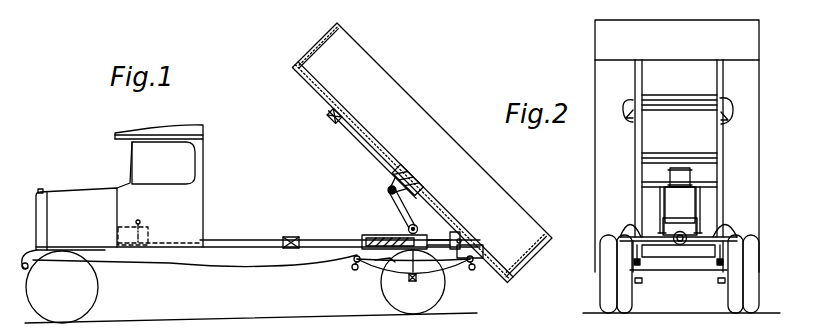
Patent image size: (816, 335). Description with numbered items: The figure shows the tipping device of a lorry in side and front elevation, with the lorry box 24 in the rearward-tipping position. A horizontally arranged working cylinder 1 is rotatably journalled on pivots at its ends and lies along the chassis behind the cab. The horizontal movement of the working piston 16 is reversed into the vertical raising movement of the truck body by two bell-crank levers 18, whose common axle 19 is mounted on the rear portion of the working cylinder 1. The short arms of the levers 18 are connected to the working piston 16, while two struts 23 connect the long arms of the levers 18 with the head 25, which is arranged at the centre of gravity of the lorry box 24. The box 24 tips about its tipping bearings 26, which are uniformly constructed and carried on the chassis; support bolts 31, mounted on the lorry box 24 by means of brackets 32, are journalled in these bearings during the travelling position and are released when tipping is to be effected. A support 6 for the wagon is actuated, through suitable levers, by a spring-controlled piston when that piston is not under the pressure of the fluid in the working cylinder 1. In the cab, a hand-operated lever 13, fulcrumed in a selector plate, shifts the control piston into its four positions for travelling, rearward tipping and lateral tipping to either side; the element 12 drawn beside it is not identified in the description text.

In FIG. 1, the working cylinder 1 is at (370, 235).
In FIG. 2, the working cylinder 1 is at (687, 232).
In FIG. 1, the support 6 is at (415, 258).
In FIG. 2, the support 6 is at (637, 255).
In FIG. 1, the control valve 12 is at (148, 240).
In FIG. 1, the hand-operated lever 13 is at (136, 222).
In FIG. 1, the working piston 16 is at (390, 262).
In FIG. 1, the bell-crank levers 18 is at (402, 207).
In FIG. 2, the bell-crank levers 18 is at (661, 204).
In FIG. 1, the common axle 19 is at (418, 229).
In FIG. 1, the struts 23 is at (389, 188).
In FIG. 2, the struts 23 is at (690, 178).
In FIG. 1, the lorry box 24 is at (518, 212).
In FIG. 2, the lorry box 24 is at (600, 32).
In FIG. 1, the head 25 is at (410, 176).
In FIG. 2, the head 25 is at (681, 168).
In FIG. 1, the tipping bearings 26 is at (300, 230).
In FIG. 1, the support bolts 31 is at (333, 123).
In FIG. 2, the support bolts 31 is at (734, 116).
In FIG. 2, the brackets 32 is at (729, 100).